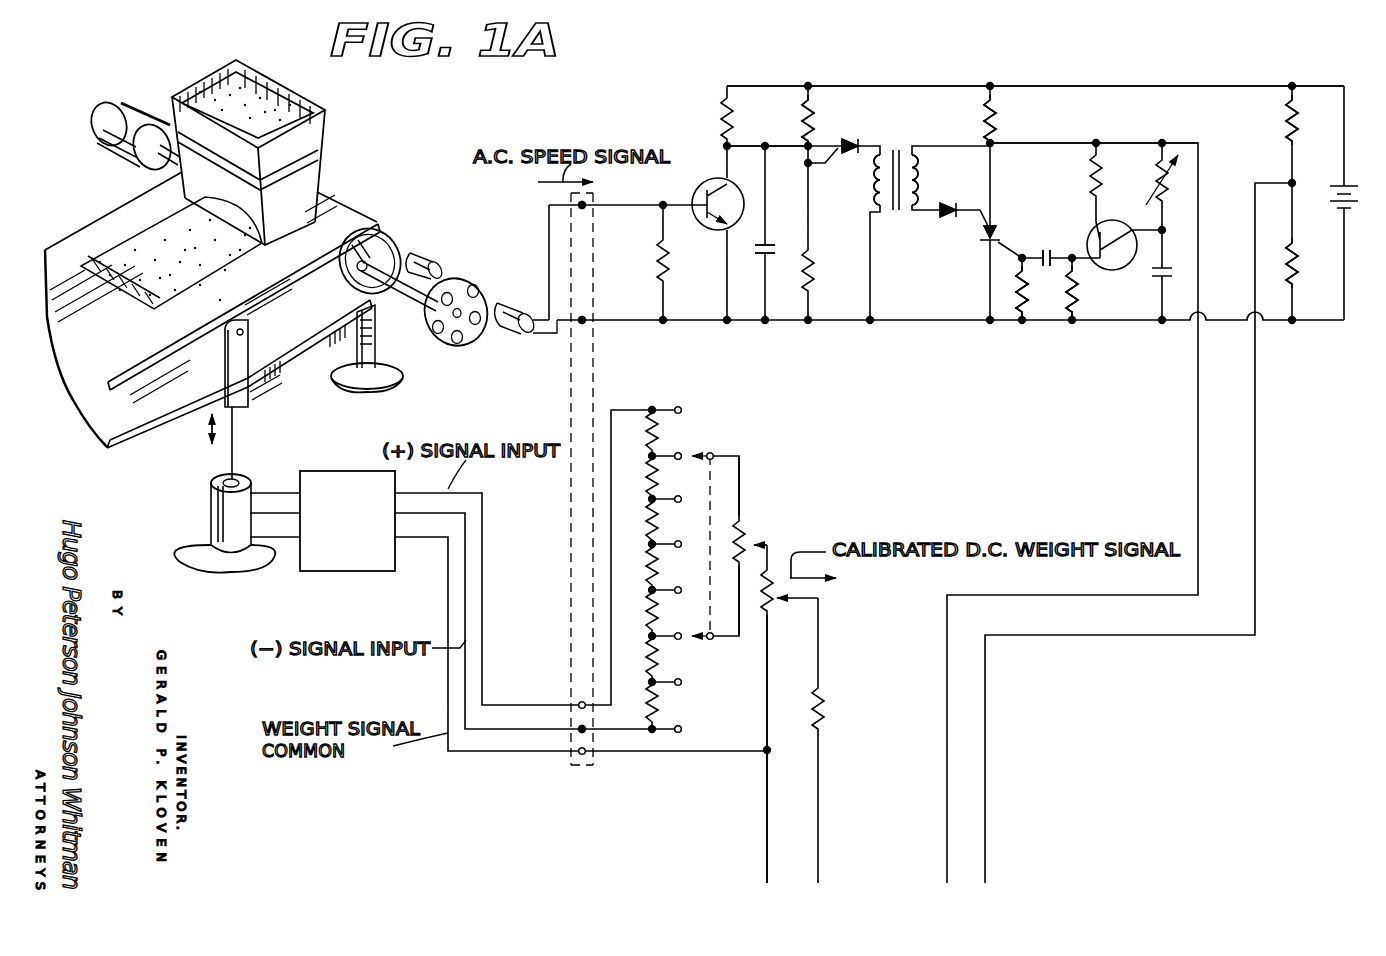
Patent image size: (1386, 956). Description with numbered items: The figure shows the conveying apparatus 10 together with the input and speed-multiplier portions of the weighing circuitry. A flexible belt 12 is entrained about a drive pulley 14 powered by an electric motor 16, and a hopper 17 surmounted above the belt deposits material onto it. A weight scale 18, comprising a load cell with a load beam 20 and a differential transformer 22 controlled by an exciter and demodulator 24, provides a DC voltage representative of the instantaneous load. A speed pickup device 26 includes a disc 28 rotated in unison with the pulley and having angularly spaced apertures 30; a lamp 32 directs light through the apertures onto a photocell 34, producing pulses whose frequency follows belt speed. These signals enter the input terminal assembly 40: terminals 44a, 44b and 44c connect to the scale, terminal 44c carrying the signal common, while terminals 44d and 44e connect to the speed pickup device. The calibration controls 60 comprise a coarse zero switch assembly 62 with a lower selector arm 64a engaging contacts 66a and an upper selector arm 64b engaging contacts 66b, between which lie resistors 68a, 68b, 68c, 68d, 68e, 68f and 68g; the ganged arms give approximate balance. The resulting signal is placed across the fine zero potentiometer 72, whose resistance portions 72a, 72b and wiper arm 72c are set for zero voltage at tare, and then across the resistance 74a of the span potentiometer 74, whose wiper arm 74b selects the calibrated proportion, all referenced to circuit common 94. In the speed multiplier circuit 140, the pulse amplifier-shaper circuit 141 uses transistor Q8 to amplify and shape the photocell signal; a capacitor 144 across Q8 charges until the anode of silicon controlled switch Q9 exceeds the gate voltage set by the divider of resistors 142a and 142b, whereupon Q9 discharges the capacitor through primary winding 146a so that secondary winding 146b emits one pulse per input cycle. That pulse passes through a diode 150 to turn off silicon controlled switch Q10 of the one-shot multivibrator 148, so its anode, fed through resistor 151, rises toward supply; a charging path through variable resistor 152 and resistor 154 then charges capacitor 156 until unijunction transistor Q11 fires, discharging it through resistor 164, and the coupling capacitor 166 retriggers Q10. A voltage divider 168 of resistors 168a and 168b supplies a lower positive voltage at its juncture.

The conveying apparatus 10 is at (349, 182).
The flexible belt 12 is at (153, 406).
The drive pulley 14 is at (340, 288).
The electric motor 16 is at (131, 103).
The hopper 17 is at (253, 62).
The weight scale 18 is at (284, 398).
The load beam 20 is at (312, 368).
The differential transformer 22 is at (160, 507).
The exciter and demodulator 24 is at (312, 572).
The speed pickup device 26 is at (510, 262).
The disc 28 is at (467, 343).
The apertures 30 is at (493, 297).
The lamp 32 is at (415, 252).
The photocell 34 is at (513, 338).
The input terminal assembly 40 is at (598, 361).
The terminal 44a is at (582, 729).
The terminal 44b is at (582, 705).
The terminal 44c is at (580, 752).
The terminal 44d is at (583, 208).
The terminal 44e is at (583, 318).
The calibration controls 60 is at (760, 446).
The coarse zero switch assembly 62 is at (693, 422).
The lower selector arm 64a is at (705, 642).
The upper selector arm 64b is at (700, 452).
The contacts 66a is at (680, 727).
The contacts 66b is at (678, 452).
The resistor 68a is at (647, 430).
The resistor 68b is at (650, 472).
The resistor 68c is at (650, 515).
The resistor 68d is at (650, 560).
The resistor 68e is at (650, 600).
The resistor 68f is at (650, 655).
The resistor 68g is at (650, 703).
The fine zero potentiometer 72 is at (746, 468).
The resistance portion 72a is at (735, 523).
The resistance portion 72b is at (735, 558).
The wiper arm 72c is at (755, 552).
The span potentiometer 74 is at (786, 541).
The resistance 74a is at (770, 628).
The wiper arm 74b is at (800, 600).
The circuit common 94 is at (767, 848).
The speed multiplier circuit 140 is at (972, 24).
The pulse amplifier-shaper circuit 141 is at (866, 52).
The resistor 142a is at (805, 124).
The resistor 142b is at (808, 260).
The capacitor 144 is at (760, 253).
The primary winding 146a is at (880, 168).
The secondary winding 146b is at (915, 176).
The one-shot multivibrator 148 is at (1143, 55).
The diode 150 is at (945, 214).
The resistor 151 is at (992, 126).
The variable resistor 152 is at (1164, 156).
The resistor 154 is at (1160, 193).
The capacitor 156 is at (1158, 278).
The resistor 164 is at (1072, 298).
The coupling capacitor 166 is at (1022, 258).
The voltage divider 168 is at (1296, 176).
The resistor 168a is at (1285, 124).
The resistor 168b is at (1295, 288).
The transistor Q8 is at (698, 187).
The silicon controlled switch Q9 is at (857, 140).
The silicon controlled switch Q10 is at (998, 233).
The unijunction transistor Q11 is at (1113, 222).